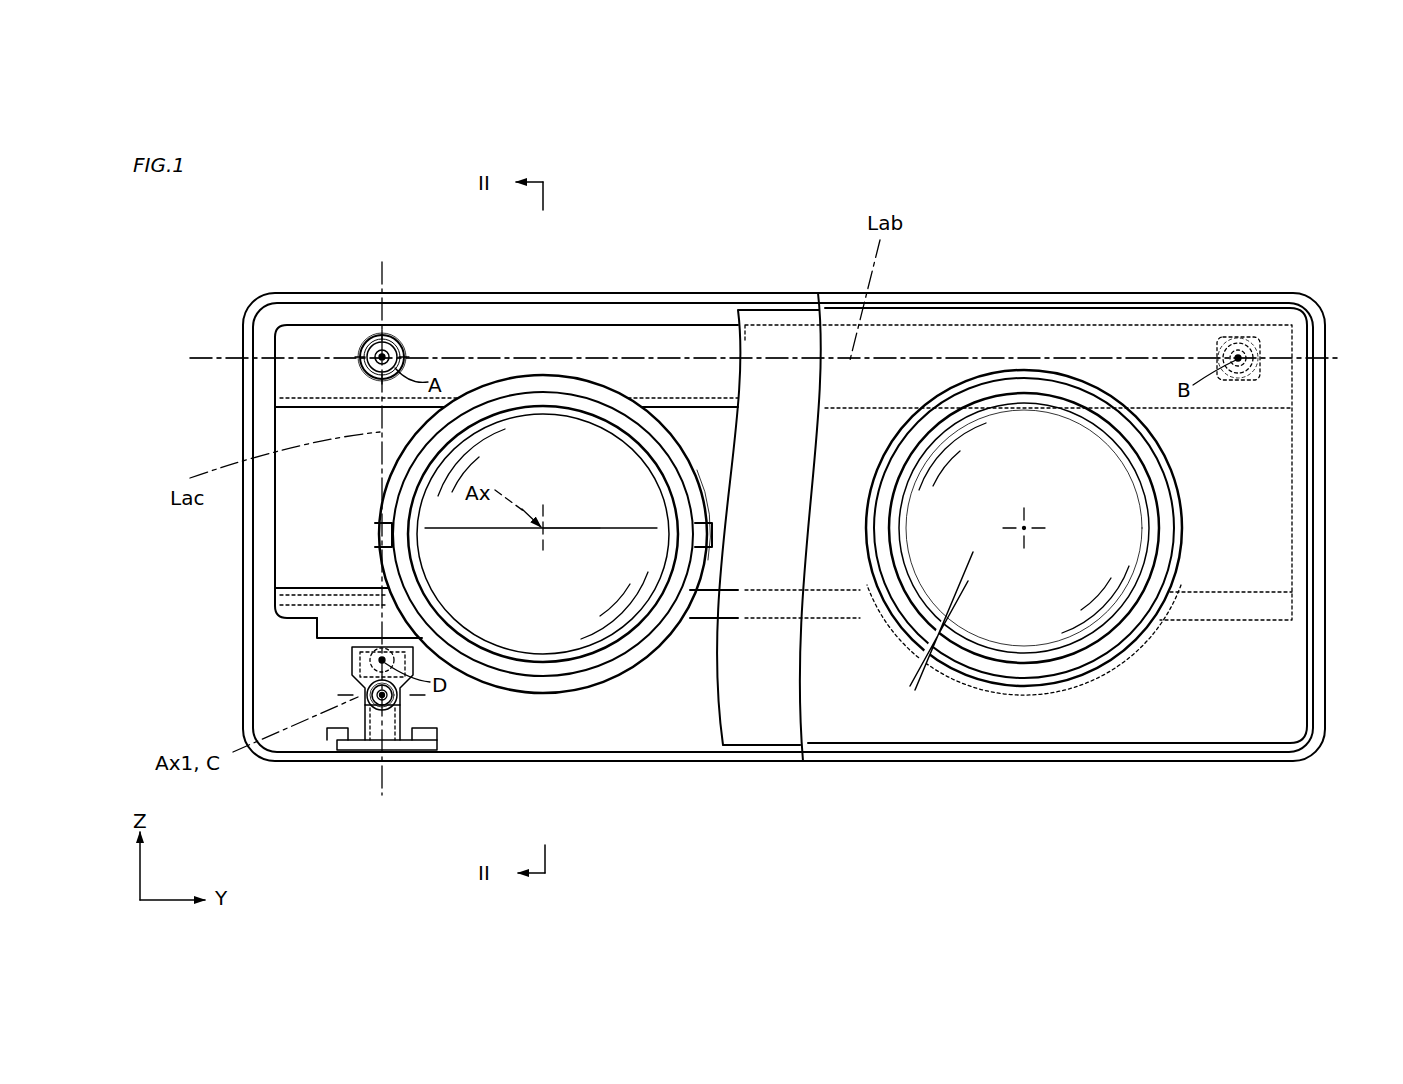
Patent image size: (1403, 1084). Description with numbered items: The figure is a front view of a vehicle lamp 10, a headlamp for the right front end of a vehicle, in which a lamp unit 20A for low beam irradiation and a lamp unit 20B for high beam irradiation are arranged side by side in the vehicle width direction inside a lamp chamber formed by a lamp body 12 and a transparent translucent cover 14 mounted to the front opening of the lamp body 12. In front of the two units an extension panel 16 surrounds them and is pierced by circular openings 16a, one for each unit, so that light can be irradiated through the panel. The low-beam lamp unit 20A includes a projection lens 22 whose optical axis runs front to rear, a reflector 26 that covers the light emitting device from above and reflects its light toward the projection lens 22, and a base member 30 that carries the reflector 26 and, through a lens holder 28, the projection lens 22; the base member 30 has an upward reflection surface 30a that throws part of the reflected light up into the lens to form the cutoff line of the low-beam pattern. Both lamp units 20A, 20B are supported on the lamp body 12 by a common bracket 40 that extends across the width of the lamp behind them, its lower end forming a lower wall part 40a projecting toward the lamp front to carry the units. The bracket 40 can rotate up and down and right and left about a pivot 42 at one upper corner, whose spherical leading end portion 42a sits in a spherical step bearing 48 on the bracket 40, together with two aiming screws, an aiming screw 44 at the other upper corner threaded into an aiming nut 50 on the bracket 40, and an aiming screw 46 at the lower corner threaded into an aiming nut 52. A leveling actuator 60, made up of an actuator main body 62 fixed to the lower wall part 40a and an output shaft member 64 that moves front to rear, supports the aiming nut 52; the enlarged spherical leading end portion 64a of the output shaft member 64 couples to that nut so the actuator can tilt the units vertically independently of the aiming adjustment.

The vehicle lamp 10 is at (1052, 210).
The lamp body 12 is at (455, 762).
The translucent cover 14 is at (1162, 768).
The extension panel 16 is at (768, 752).
The circular opening 16a is at (1068, 377).
The lamp unit for low beam irradiation 20A is at (622, 365).
The lamp unit for high beam irradiation 20B is at (1108, 362).
The projection lens 22 is at (513, 393).
The reflector 26 is at (698, 470).
The lens holder 28 is at (570, 383).
The base member 30 is at (668, 650).
The upward reflection surface 30a is at (562, 528).
The bracket 40 is at (293, 320).
The lower wall part 40a is at (367, 587).
The pivot 42 is at (372, 338).
The leading end portion 42a is at (398, 352).
The aiming screw 44 is at (1240, 356).
The aiming screw 46 is at (395, 705).
The spherical step bearing 48 is at (358, 362).
The aiming nut 50 is at (1262, 375).
The aiming nut 52 is at (362, 708).
The leveling actuator 60 is at (312, 634).
The actuator main body 62 is at (355, 615).
The output shaft member 64 is at (375, 645).
The leading end portion 64a is at (370, 662).